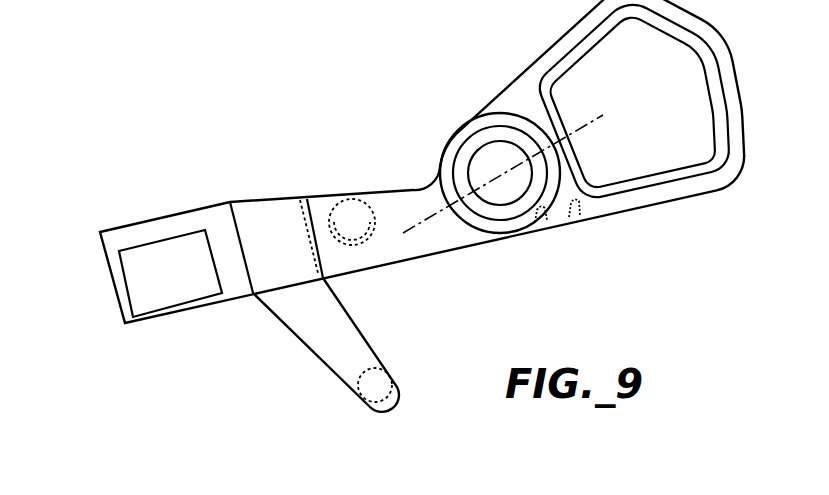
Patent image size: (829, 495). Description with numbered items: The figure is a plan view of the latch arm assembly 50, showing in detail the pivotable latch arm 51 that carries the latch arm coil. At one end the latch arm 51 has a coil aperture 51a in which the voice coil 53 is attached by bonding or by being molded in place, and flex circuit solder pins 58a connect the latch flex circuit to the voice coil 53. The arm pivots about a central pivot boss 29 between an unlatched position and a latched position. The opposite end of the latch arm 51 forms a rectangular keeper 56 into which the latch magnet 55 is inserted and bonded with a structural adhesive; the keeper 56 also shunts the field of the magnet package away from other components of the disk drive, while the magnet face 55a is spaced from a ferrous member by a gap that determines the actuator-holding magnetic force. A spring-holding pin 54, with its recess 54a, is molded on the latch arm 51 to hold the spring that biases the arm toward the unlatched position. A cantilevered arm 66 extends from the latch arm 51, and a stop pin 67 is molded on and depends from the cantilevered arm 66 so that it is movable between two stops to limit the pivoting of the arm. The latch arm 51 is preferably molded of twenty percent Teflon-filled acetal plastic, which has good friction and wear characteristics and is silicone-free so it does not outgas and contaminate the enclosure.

The latch arm assembly 50 is at (396, 226).
The latch arm 51 is at (672, 192).
The coil aperture 51a is at (573, 77).
The voice coil 53 is at (682, 45).
The pivot boss 29 is at (472, 163).
The spring-holding pin 54 is at (348, 199).
The detent recess wall 54a is at (368, 238).
The latch magnet 55 is at (165, 300).
The magnet face 55a is at (200, 305).
The rectangular keeper 56 is at (118, 283).
The flex circuit solder pins 58a is at (539, 232).
The cantilevered arm 66 is at (310, 345).
The stop pin 67 is at (375, 392).